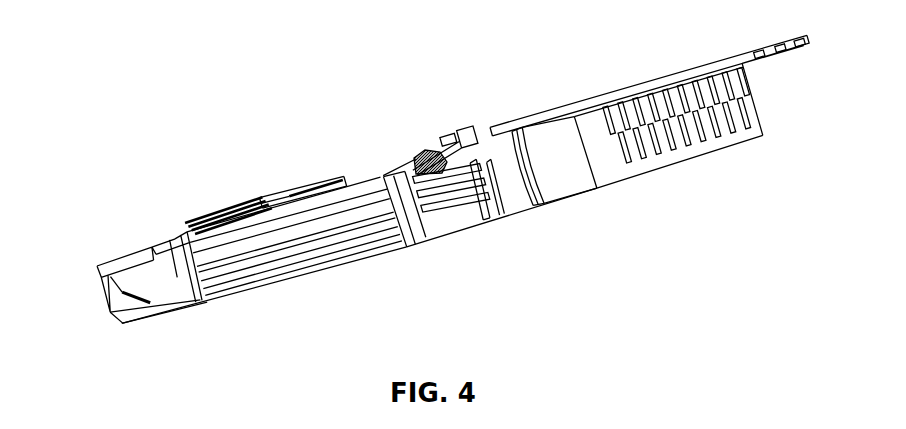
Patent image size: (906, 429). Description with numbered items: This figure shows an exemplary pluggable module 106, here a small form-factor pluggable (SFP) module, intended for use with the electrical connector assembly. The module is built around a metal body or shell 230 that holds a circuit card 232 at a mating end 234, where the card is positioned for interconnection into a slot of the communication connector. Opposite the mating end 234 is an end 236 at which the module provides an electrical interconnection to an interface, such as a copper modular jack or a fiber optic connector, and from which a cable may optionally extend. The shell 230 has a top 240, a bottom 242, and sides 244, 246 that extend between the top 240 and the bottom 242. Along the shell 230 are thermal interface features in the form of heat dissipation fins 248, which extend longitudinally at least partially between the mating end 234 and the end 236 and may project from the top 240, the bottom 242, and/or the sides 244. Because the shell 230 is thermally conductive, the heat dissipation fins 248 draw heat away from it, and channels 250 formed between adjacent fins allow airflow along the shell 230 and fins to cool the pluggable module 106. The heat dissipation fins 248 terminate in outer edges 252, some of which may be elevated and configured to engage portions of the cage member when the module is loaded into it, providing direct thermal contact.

The pluggable module 106 is at (175, 224).
The shell 230 is at (237, 282).
The circuit card 232 is at (150, 303).
The mating end 234 is at (105, 282).
The end 236 is at (538, 209).
The top 240 is at (152, 247).
The bottom 242 is at (320, 272).
The side 244 is at (135, 317).
The side 246 is at (100, 308).
The heat dissipation fins 248 is at (325, 180).
The channels 250 is at (345, 174).
The outer edges 252 is at (307, 182).